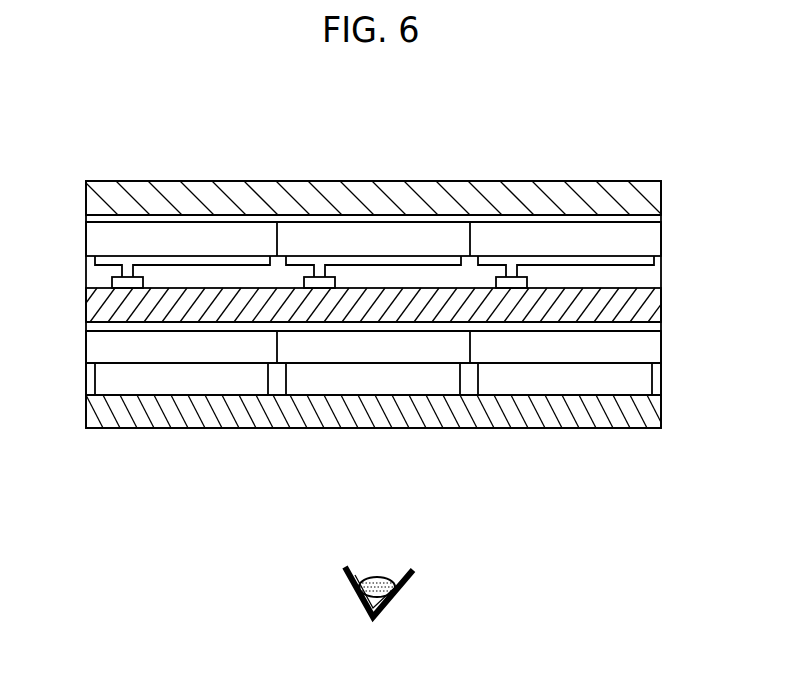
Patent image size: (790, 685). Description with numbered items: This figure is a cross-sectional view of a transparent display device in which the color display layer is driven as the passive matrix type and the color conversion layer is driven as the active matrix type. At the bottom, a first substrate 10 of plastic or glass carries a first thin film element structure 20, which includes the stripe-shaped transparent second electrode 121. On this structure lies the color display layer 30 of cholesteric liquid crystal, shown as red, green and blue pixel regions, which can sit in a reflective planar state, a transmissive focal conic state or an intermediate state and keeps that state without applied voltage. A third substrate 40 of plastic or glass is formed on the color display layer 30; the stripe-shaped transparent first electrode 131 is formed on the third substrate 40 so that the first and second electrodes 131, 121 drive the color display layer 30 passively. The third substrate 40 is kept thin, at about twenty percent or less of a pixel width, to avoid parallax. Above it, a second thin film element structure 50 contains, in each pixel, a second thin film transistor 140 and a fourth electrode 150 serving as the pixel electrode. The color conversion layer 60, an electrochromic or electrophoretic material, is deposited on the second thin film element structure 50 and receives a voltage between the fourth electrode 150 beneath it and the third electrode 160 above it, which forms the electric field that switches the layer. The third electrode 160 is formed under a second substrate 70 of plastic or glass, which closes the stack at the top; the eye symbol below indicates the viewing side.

The first substrate 10 is at (650, 410).
The first thin film element structure 20 is at (392, 418).
The color display layer 30 is at (648, 348).
The third substrate 40 is at (650, 306).
The second thin film element structure 50 is at (363, 265).
The color conversion layer 60 is at (650, 238).
The second substrate 70 is at (648, 198).
The second electrode 121 is at (185, 380).
The first electrode 131 is at (90, 326).
The second thin film transistor 140 is at (120, 282).
The fourth electrode 150 is at (108, 262).
The third electrode 160 is at (90, 221).